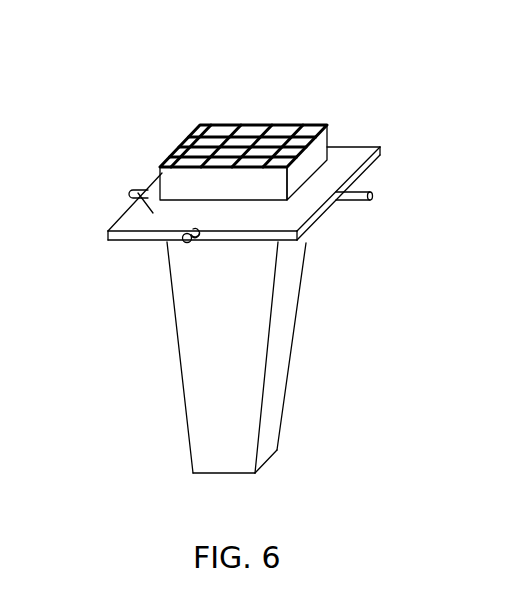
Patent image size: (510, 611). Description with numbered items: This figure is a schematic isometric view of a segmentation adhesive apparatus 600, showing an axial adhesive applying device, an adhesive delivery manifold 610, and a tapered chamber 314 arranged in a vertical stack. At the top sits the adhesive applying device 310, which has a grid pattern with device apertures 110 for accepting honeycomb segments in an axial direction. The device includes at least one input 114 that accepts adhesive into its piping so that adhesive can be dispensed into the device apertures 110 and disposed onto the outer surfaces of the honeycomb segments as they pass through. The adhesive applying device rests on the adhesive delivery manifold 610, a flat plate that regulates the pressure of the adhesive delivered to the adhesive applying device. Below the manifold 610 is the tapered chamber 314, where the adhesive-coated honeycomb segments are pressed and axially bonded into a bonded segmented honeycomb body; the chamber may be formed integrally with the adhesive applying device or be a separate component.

The segmentation adhesive apparatus 600 is at (140, 98).
The device apertures 110 is at (243, 145).
The container box 310 is at (324, 146).
The tapered chamber 314 is at (290, 307).
The input 114 is at (371, 191).
The adhesive delivery manifold 610 is at (130, 198).